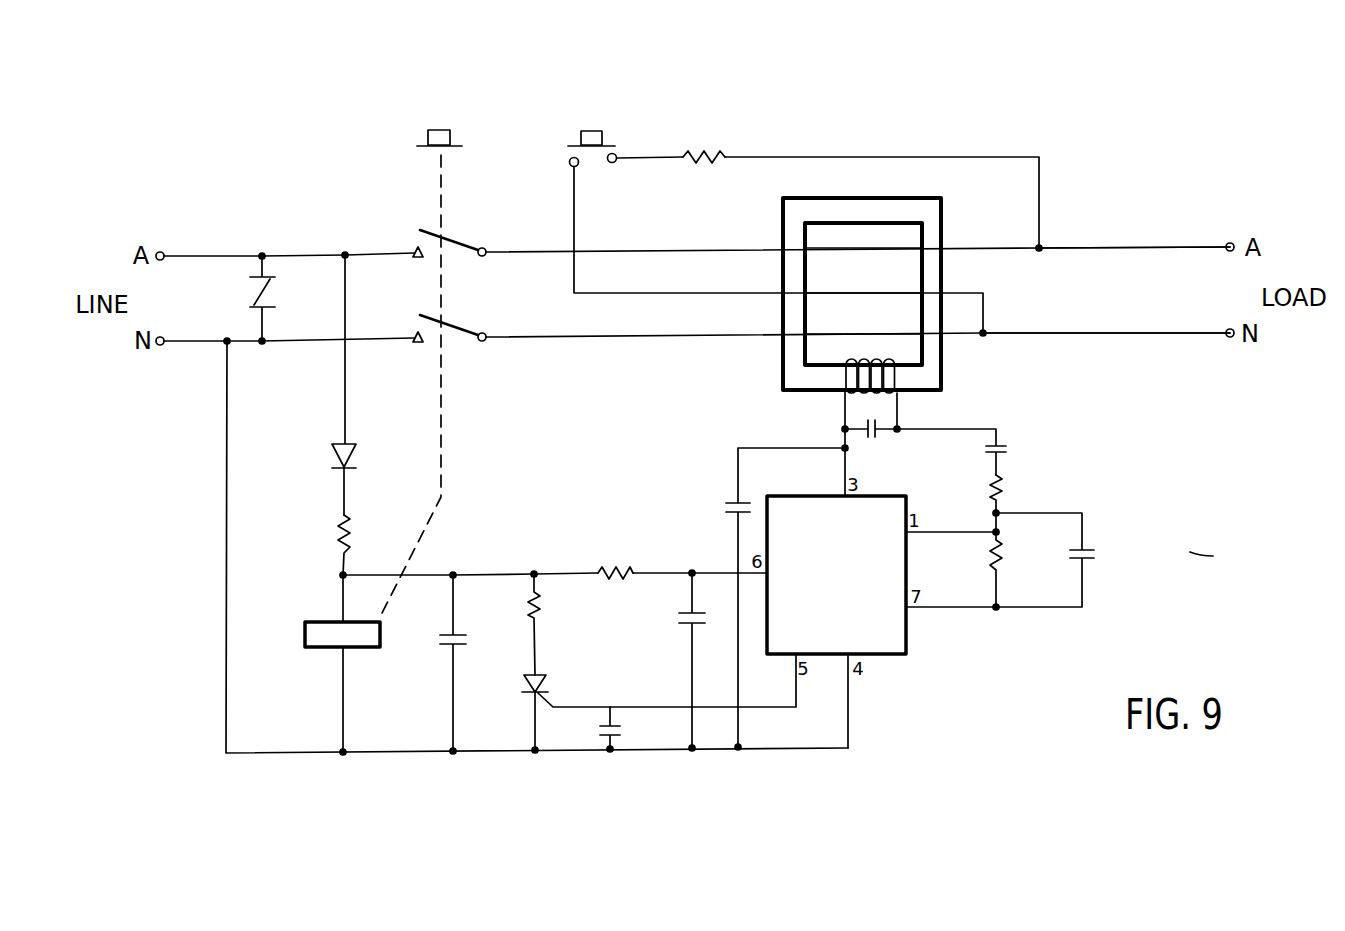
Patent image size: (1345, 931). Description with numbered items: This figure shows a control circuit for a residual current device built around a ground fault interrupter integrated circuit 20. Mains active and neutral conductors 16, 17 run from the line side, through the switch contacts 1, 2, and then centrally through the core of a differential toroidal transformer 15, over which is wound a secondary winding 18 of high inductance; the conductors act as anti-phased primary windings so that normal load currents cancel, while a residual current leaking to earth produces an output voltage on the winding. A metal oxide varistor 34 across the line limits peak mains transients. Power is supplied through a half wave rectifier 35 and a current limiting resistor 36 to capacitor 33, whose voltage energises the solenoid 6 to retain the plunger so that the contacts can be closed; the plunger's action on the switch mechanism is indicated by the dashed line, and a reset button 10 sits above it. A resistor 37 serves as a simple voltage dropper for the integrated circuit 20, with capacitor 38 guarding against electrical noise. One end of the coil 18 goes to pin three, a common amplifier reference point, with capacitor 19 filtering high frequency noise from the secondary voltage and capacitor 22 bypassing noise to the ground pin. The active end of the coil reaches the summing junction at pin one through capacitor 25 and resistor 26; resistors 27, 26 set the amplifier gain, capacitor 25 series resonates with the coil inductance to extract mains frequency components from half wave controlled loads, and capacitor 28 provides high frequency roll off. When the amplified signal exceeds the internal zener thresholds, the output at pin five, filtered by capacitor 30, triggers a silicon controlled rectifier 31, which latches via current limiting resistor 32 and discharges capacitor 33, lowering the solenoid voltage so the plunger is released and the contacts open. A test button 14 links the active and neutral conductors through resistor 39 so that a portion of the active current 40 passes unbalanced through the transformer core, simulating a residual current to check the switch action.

The contacts 1 is at (416, 332).
The contacts 2 is at (421, 316).
The solenoid 6 is at (318, 650).
The reset button 10 is at (443, 121).
The button 14 is at (610, 130).
The differential toroidal transformer 15 is at (930, 367).
The mains active conductor 16 is at (1148, 245).
The mains neutral conductor 17 is at (1153, 332).
The secondary winding 18 is at (843, 377).
The capacitor 19 is at (880, 438).
The ground fault interrupter integrated circuit 20 is at (883, 648).
The capacitor 22 is at (728, 497).
The capacitor 25 is at (1008, 447).
The resistor 26 is at (1005, 483).
The resistor 27 is at (1007, 553).
The capacitor 28 is at (1097, 555).
The capacitor 30 is at (602, 750).
The silicon controlled rectifier 31 is at (533, 695).
The current limiting resistor 32 is at (528, 592).
The capacitor 33 is at (445, 650).
The metal oxide varistor 34 is at (282, 278).
The half wave rectifier 35 is at (332, 458).
The current limiting resistor 36 is at (333, 535).
The resistor 37 is at (622, 565).
The capacitor 38 is at (683, 607).
The resistor 39 is at (707, 150).
The line conductors through transformer core 40 is at (828, 290).